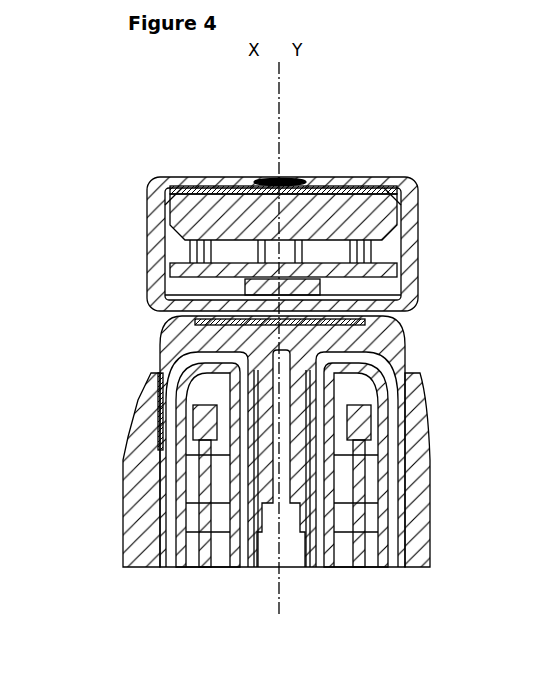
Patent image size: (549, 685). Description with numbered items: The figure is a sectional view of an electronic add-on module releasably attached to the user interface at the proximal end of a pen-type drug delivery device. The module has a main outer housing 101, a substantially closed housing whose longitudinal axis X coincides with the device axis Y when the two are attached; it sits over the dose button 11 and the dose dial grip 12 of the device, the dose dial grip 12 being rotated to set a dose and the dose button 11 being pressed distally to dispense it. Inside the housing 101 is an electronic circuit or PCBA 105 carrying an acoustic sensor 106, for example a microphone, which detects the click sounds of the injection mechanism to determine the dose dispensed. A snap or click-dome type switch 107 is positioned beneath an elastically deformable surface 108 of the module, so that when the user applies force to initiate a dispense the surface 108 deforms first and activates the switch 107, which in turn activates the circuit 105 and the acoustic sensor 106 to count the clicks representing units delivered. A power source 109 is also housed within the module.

The main outer housing 101 is at (148, 246).
The electronic circuit or PCBA 105 is at (180, 272).
The acoustic sensor 106 is at (250, 290).
The switch 107 is at (300, 180).
The elastically deformable surface 108 is at (213, 176).
The power source 109 is at (177, 208).
The dose button 11 is at (165, 352).
The dose dial grip 12 is at (137, 420).